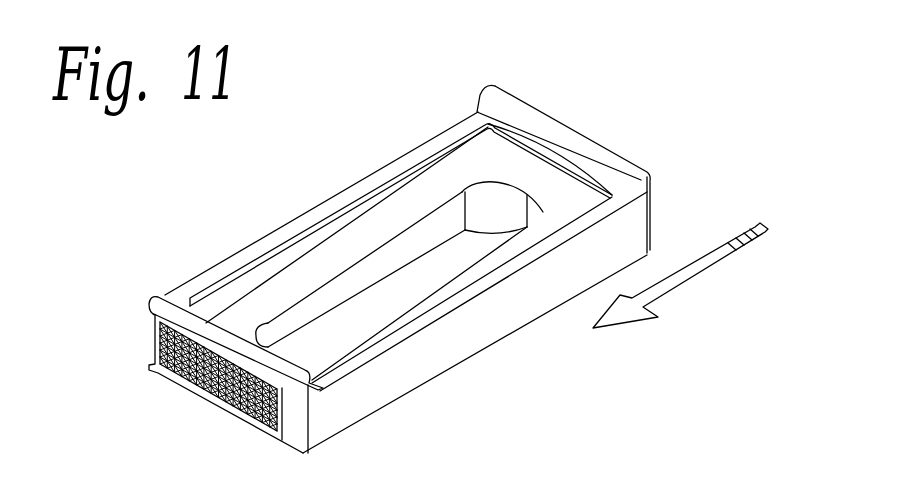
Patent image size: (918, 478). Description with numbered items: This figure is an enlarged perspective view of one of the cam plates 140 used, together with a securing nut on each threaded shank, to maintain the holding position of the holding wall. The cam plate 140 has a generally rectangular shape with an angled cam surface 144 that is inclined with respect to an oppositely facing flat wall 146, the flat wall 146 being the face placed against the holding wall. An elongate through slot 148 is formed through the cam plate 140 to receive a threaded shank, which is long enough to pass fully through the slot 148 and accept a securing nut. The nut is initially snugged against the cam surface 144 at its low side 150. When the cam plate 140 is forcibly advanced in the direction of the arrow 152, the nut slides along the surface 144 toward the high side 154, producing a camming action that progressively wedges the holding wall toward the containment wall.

The cam plate 140 is at (473, 337).
The angled cam surface 144 is at (368, 230).
The flat wall 146 is at (532, 325).
The elongate through slot 148 is at (423, 230).
The low side 150 is at (260, 307).
The arrow 152 is at (682, 278).
The high side 154 is at (473, 167).